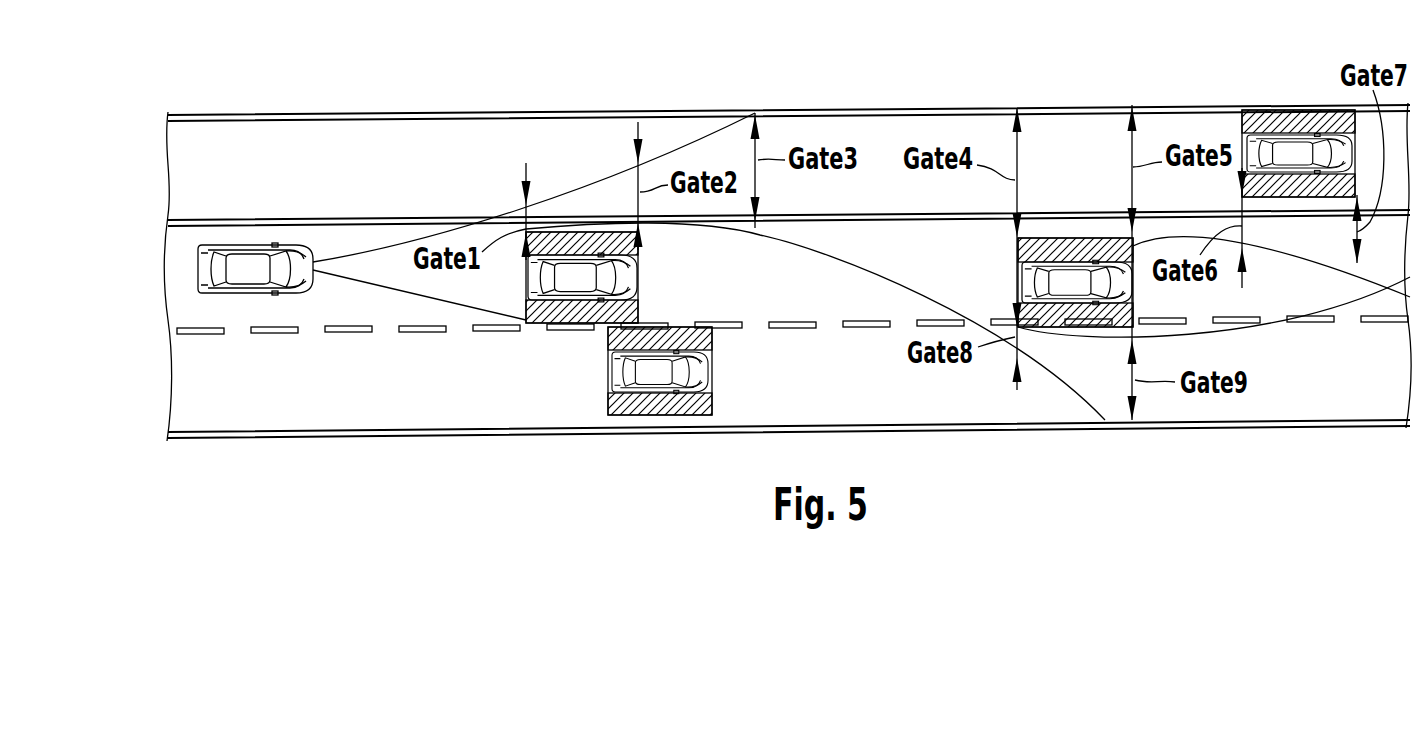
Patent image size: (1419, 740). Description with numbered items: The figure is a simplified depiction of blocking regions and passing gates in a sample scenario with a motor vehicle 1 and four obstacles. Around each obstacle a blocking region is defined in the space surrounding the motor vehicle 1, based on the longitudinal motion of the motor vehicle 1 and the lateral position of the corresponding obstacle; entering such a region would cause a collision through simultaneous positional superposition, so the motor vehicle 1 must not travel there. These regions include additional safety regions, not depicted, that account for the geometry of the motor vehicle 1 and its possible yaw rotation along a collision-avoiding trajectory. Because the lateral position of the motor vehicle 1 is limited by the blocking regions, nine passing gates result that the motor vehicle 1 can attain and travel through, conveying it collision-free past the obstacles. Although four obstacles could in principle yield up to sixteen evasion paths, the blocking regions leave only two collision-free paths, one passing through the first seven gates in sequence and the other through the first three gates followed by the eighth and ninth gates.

The motor vehicle 1 is at (247, 268).